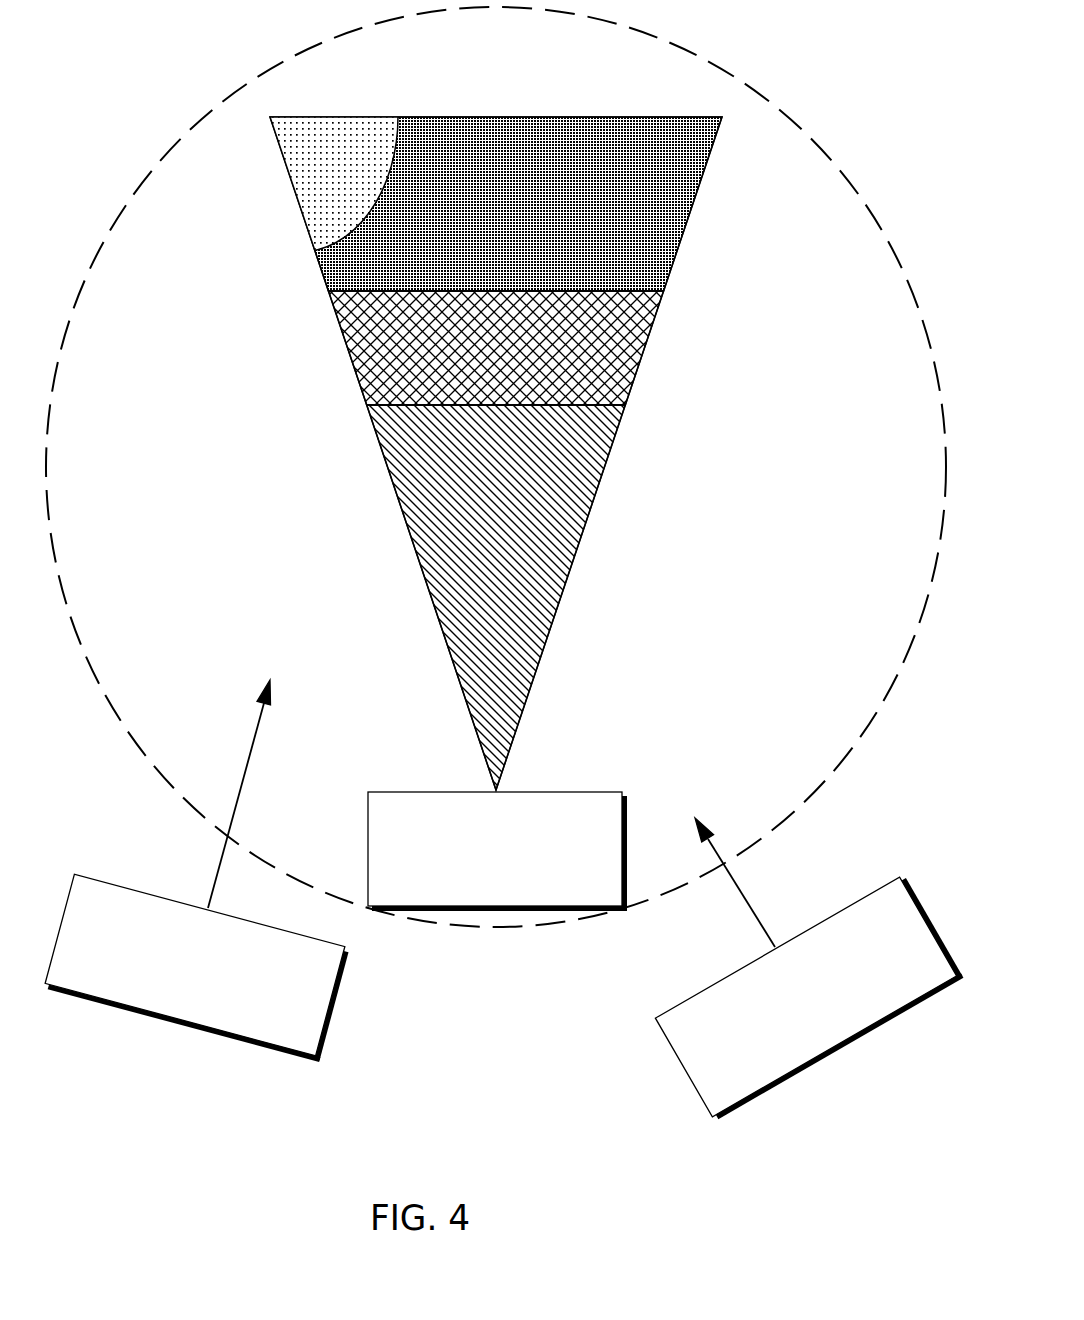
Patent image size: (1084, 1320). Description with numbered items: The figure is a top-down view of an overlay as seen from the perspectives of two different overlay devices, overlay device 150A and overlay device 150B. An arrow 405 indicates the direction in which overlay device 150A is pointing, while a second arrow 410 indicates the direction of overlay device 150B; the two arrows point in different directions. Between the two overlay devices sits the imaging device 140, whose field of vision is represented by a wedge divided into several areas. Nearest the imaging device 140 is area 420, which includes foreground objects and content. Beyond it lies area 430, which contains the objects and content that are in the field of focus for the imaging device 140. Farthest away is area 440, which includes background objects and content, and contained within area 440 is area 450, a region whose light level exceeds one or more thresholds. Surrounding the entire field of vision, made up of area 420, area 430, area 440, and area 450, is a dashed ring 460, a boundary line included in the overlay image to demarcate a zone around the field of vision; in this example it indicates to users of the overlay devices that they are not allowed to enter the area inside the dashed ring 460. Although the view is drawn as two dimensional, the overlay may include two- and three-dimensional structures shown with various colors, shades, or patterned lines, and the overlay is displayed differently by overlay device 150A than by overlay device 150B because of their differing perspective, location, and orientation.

The dashed ring 460 is at (217, 104).
The area 450 is at (291, 174).
The area 440 is at (673, 233).
The area 430 is at (367, 363).
The area 420 is at (562, 568).
The arrow 405 is at (220, 868).
The arrow 410 is at (740, 885).
The imaging device 140 is at (518, 876).
The overlay device 150A is at (196, 967).
The overlay device 150B is at (808, 997).